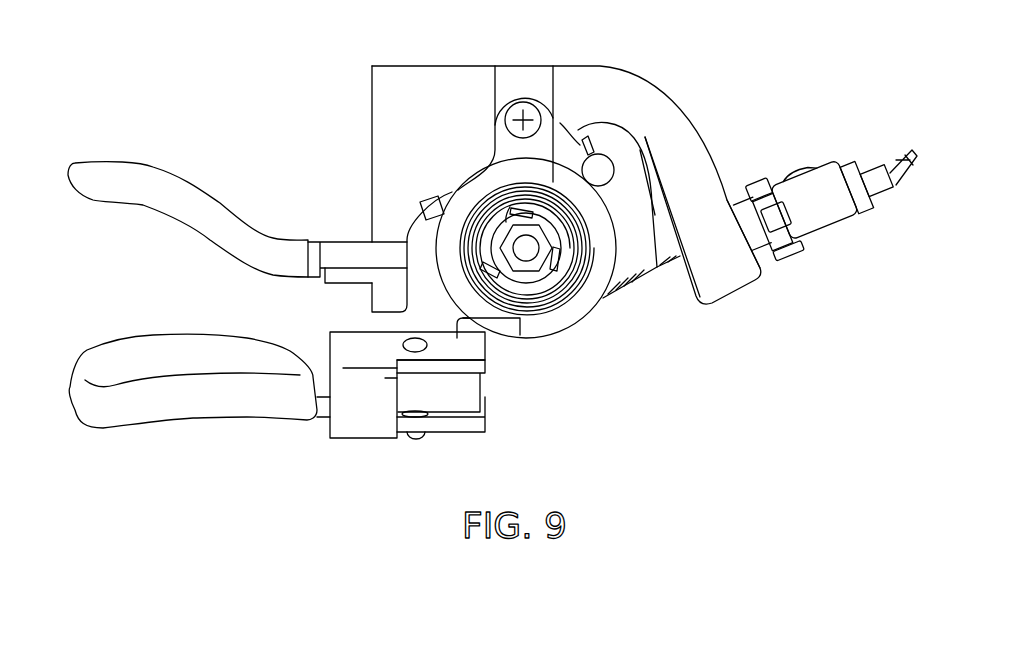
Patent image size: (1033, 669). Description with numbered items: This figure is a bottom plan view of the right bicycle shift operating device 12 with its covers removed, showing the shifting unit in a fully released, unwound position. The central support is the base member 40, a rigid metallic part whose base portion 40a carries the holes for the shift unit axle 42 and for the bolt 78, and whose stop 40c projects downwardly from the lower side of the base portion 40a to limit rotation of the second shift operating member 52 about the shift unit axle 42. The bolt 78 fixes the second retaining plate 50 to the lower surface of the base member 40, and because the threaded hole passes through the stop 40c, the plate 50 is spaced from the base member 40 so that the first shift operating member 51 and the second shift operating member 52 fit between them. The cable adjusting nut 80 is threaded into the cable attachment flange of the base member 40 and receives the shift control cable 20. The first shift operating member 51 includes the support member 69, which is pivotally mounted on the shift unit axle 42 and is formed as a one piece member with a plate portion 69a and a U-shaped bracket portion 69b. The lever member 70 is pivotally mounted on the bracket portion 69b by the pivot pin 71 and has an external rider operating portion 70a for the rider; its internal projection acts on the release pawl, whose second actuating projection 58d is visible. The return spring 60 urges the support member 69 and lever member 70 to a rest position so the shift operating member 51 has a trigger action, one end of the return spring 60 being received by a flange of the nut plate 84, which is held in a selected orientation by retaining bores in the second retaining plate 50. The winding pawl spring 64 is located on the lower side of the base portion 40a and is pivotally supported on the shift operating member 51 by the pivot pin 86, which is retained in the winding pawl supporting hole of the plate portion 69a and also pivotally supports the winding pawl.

The bicycle shift operating device 12 is at (725, 420).
The shift control cable 20 is at (865, 152).
The base member 40 is at (660, 75).
The base portion 40a is at (420, 95).
The stop 40c is at (527, 78).
The shift unit axle 42 is at (530, 249).
The second retaining plate 50 is at (458, 188).
The first shift operating member 51 is at (365, 440).
The second shift operating member 52 is at (153, 168).
The second actuating projection 58d is at (328, 281).
The return spring 60 is at (578, 295).
The winding pawl spring 64 is at (568, 123).
The support member 69 is at (650, 222).
The plate portion 69a is at (420, 232).
The bracket portion 69b is at (465, 432).
The lever member 70 is at (125, 327).
The external rider operating portion 70a is at (187, 335).
The pivot pin 71 is at (412, 438).
The bolt 78 is at (505, 122).
The cable adjusting nut 80 is at (835, 210).
The nut plate 84 is at (443, 203).
The pivot pin 86 is at (600, 168).